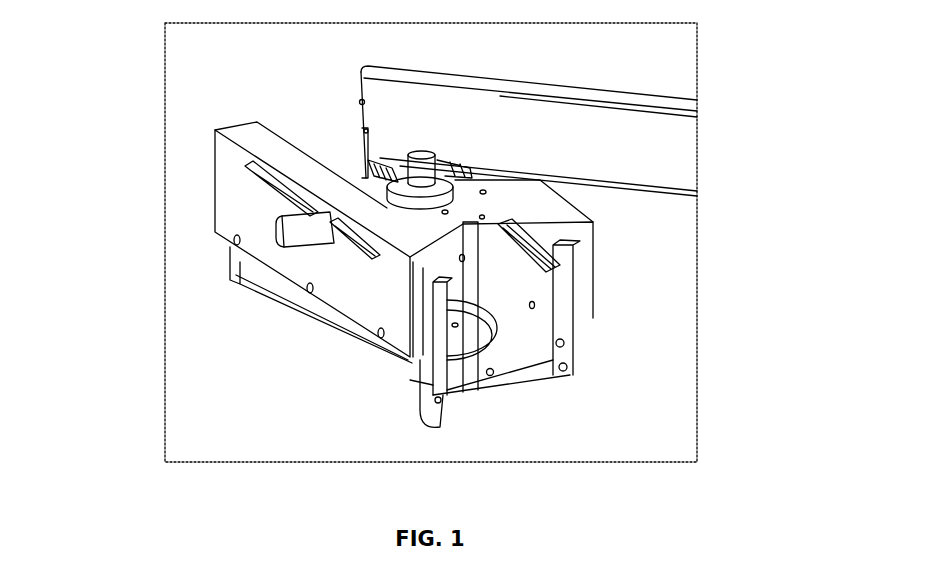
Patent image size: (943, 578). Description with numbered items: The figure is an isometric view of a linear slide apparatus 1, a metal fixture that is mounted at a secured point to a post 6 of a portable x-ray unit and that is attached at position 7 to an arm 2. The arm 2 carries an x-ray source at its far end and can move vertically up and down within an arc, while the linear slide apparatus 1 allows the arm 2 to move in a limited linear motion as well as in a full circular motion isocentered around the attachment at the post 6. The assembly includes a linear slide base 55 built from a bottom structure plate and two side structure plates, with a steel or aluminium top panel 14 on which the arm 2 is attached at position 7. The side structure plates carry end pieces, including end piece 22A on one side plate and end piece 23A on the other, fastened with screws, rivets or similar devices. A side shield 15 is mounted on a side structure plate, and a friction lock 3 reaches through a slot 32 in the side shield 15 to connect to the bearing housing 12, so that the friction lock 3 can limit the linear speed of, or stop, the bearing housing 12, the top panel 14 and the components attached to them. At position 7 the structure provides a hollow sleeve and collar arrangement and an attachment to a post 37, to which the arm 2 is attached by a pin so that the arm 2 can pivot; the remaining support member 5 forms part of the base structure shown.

The linear slide apparatus 1 is at (699, 59).
The arm 2 is at (529, 131).
The friction lock 3 is at (268, 230).
The post 5 is at (535, 273).
The post 6 is at (424, 410).
The position 7 is at (397, 177).
The support post 12 is at (497, 250).
The top panel 14 is at (464, 226).
The side shield 15 is at (357, 318).
The end piece 22A is at (402, 366).
The end piece 23A is at (577, 318).
The slot 32 is at (287, 201).
The post 37 is at (455, 167).
The linear slide base 55 is at (451, 392).